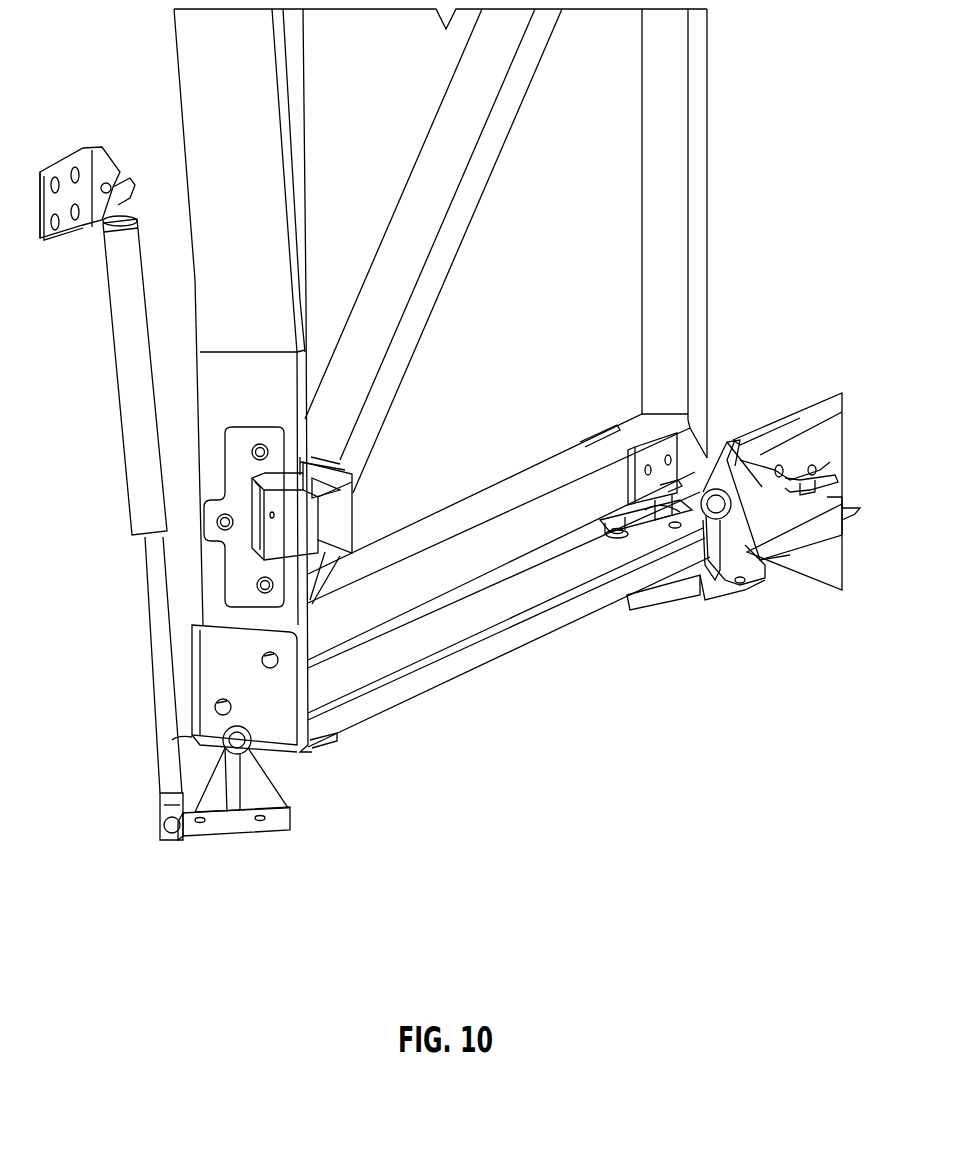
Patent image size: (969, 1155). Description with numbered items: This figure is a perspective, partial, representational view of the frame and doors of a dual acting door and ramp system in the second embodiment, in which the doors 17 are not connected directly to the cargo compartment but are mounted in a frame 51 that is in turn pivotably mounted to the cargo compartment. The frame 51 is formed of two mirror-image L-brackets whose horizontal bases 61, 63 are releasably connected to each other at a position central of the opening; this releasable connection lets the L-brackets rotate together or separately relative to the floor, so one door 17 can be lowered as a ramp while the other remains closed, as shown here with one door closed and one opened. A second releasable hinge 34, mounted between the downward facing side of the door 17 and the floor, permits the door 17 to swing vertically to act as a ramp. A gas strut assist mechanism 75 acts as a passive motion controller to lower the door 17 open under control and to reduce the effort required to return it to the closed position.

The door 17 is at (711, 134).
The second releasable hinge 34 is at (355, 514).
The frame 51 is at (190, 60).
The horizontal base 61 is at (486, 650).
The horizontal base 63 is at (790, 410).
The gas strut assist mechanism 75 is at (126, 380).